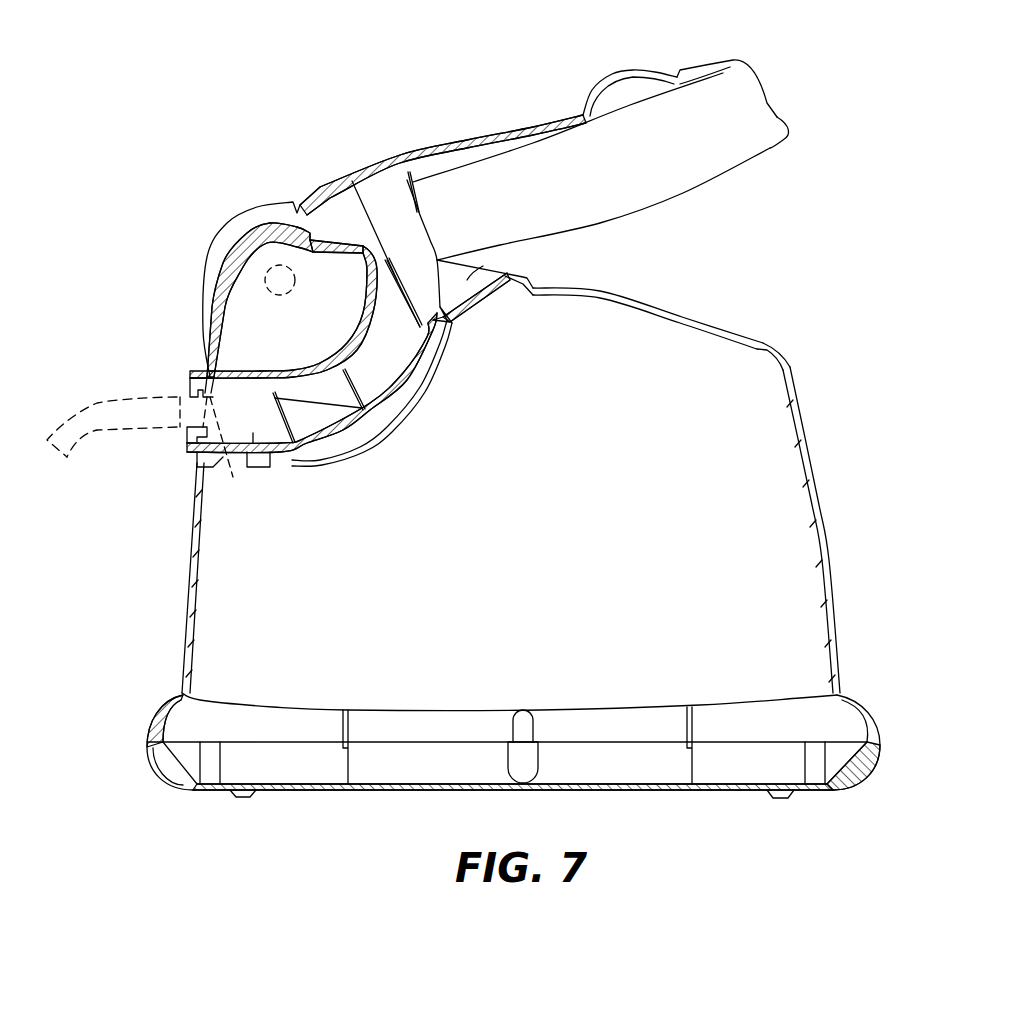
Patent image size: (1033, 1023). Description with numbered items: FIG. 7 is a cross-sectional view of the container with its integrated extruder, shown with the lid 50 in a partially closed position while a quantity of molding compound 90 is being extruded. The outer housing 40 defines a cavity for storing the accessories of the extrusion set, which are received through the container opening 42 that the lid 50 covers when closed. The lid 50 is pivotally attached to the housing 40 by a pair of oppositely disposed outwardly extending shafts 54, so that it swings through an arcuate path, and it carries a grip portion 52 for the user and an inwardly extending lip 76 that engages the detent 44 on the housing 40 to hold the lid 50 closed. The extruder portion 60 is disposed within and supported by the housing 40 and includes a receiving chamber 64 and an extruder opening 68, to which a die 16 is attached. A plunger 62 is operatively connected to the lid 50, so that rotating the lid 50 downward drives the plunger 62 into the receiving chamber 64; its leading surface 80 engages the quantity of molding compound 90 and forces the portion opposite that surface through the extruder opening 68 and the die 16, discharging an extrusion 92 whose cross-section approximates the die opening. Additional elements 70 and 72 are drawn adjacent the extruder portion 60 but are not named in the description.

The die 16 is at (185, 430).
The outer housing 40 is at (825, 516).
The container opening 42 is at (613, 298).
The detent 44 is at (790, 367).
The lid 50 is at (680, 194).
The grip portion 52 is at (637, 63).
The shaft 54 is at (267, 293).
The extruder portion 60 is at (434, 376).
The plunger 62 is at (375, 405).
The receiving chamber 64 is at (483, 266).
The extruder opening 68 is at (267, 457).
The upper clip / guide 70 is at (190, 380).
The lower clip / guide 72 is at (185, 447).
The inwardly extending lip 76 is at (767, 130).
The leading surface 80 is at (280, 428).
The quantity of molding compound 90 is at (265, 468).
The extrusion 92 is at (87, 443).